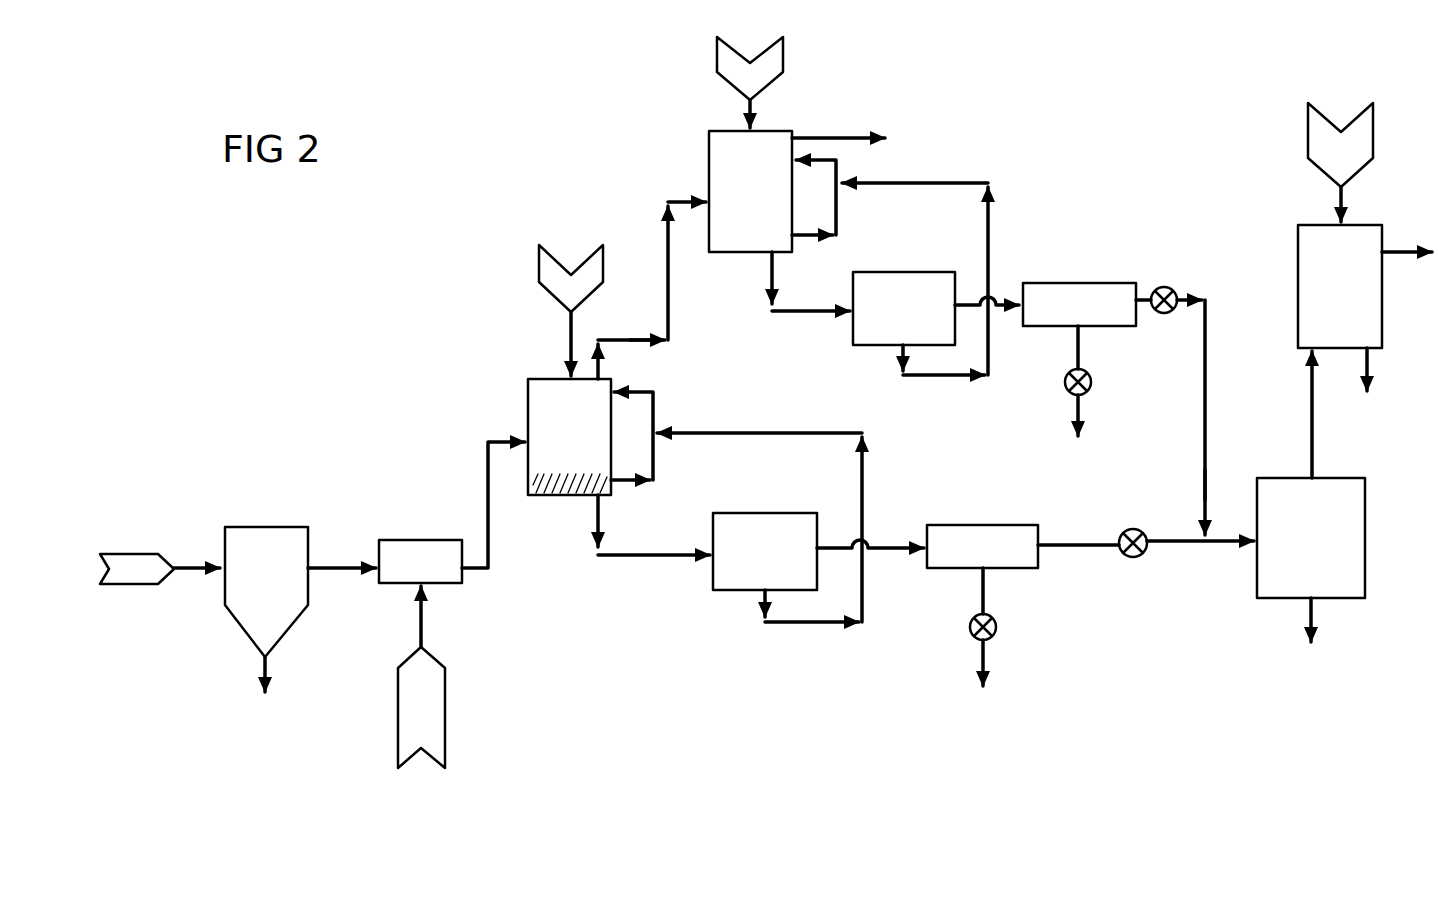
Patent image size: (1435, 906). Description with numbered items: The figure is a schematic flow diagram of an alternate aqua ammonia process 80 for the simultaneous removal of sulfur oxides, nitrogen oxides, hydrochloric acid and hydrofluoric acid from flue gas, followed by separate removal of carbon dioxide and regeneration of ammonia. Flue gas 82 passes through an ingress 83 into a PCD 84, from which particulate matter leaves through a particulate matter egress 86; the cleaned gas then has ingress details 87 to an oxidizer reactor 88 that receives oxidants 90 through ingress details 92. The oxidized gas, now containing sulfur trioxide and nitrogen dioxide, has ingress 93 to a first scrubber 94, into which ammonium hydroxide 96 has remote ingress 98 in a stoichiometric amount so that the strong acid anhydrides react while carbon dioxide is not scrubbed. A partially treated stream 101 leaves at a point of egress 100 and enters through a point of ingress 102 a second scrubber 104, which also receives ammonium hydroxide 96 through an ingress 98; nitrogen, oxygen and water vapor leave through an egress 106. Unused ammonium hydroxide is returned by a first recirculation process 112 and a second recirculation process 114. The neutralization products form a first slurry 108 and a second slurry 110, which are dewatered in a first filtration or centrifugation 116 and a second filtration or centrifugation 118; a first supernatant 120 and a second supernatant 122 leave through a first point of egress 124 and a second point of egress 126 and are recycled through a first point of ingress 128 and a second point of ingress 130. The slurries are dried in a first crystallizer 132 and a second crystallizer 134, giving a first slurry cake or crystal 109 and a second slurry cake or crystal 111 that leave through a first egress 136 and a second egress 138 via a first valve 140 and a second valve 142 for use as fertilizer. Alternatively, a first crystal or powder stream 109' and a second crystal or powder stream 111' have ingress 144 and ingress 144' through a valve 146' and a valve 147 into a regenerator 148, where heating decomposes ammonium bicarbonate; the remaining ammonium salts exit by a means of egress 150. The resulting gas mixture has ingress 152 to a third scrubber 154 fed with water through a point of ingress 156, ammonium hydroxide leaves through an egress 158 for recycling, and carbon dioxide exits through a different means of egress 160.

The process 80 is at (693, 690).
The flue gas 82 is at (113, 551).
The ingress to the PCD 83 is at (190, 566).
The PCD 84 is at (262, 527).
The particulate matter egress 86 is at (258, 688).
The ingress details of flue gas to the oxidizer reactor 87 is at (338, 567).
The oxidizer reactor 88 is at (413, 540).
The oxidants 90 is at (398, 736).
The ingress details of the oxidants 92 is at (424, 627).
The ingress to first scrubber 93 is at (483, 480).
The first scrubber 94 is at (527, 409).
The ammonium hydroxide 96 is at (571, 270).
The ingress of ammonium hydroxide 98 is at (569, 323).
The point of egress from the first scrubber 100 is at (601, 340).
The partially treated stream 101 is at (642, 358).
The point of ingress to second scrubber 102 is at (680, 200).
The second scrubber 104 is at (785, 131).
The egress from the second scrubber 106 is at (866, 138).
The first slurry 108 is at (556, 498).
The first slurry cake or crystal 109 is at (949, 591).
The first crystal or powder stream 109' is at (1078, 568).
The second slurry 110 is at (790, 313).
The second slurry cake or crystal 111 is at (1047, 353).
The second crystal or powder stream 111' is at (1178, 417).
The first recirculation process 112 is at (656, 456).
The second recirculation process 114 is at (838, 211).
The first filtration or centrifugation 116 is at (757, 513).
The second filtration or centrifugation 118 is at (858, 348).
The first supernatant 120 is at (763, 628).
The second supernatant 122 is at (907, 383).
The first point of egress 124 is at (753, 601).
The second point of egress 126 is at (897, 353).
The first point of ingress 128 is at (675, 431).
The second point of ingress 130 is at (875, 184).
The first crystallizer 132 is at (962, 525).
The second crystallizer 134 is at (1068, 283).
The first egress 136 is at (982, 677).
The second egress 138 is at (1072, 426).
The first valve 140 is at (970, 633).
The second valve 142 is at (1092, 381).
The ingress of first crystal or powder stream 144 is at (1200, 577).
The ingress of second crystal or powder stream 144' is at (1242, 464).
The valve 146' is at (1137, 582).
The valve 147 is at (1172, 288).
The regenerator 148 is at (1366, 529).
The means of egress 150 is at (1303, 646).
The ingress to third scrubber 152 is at (1308, 386).
The third scrubber 154 is at (1298, 237).
The point of ingress of water 156 is at (1343, 196).
The egress of ammonium hydroxide 158 is at (1368, 377).
The means of egress of carbon dioxide 160 is at (1398, 252).